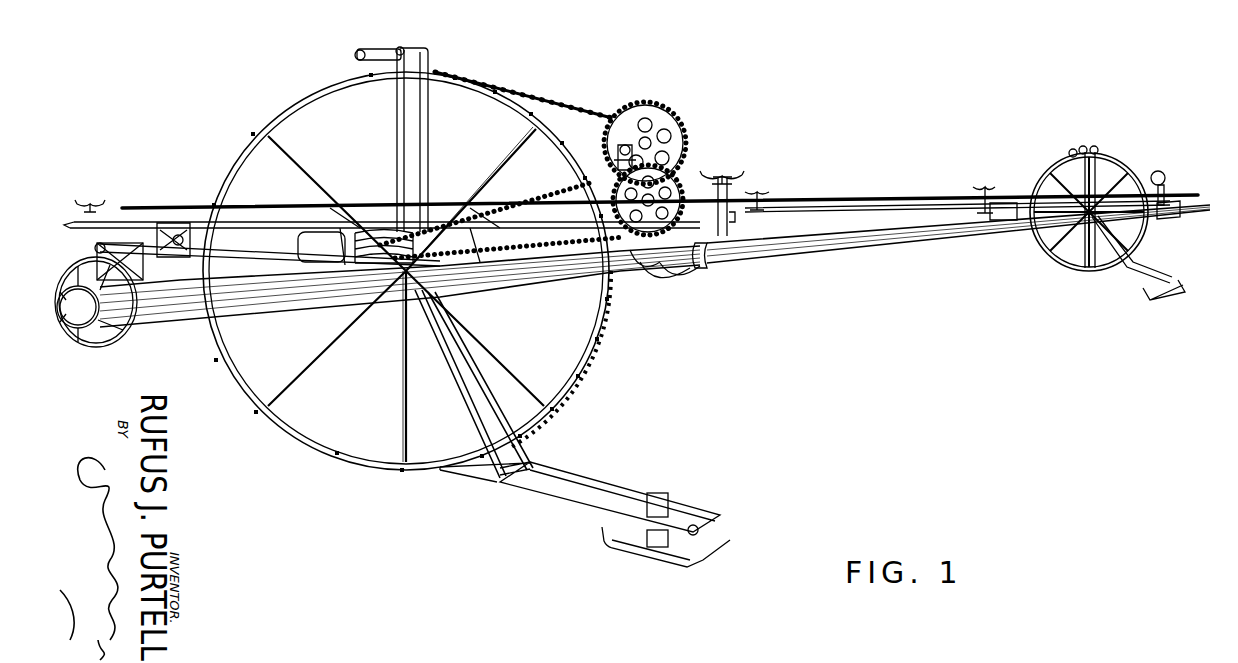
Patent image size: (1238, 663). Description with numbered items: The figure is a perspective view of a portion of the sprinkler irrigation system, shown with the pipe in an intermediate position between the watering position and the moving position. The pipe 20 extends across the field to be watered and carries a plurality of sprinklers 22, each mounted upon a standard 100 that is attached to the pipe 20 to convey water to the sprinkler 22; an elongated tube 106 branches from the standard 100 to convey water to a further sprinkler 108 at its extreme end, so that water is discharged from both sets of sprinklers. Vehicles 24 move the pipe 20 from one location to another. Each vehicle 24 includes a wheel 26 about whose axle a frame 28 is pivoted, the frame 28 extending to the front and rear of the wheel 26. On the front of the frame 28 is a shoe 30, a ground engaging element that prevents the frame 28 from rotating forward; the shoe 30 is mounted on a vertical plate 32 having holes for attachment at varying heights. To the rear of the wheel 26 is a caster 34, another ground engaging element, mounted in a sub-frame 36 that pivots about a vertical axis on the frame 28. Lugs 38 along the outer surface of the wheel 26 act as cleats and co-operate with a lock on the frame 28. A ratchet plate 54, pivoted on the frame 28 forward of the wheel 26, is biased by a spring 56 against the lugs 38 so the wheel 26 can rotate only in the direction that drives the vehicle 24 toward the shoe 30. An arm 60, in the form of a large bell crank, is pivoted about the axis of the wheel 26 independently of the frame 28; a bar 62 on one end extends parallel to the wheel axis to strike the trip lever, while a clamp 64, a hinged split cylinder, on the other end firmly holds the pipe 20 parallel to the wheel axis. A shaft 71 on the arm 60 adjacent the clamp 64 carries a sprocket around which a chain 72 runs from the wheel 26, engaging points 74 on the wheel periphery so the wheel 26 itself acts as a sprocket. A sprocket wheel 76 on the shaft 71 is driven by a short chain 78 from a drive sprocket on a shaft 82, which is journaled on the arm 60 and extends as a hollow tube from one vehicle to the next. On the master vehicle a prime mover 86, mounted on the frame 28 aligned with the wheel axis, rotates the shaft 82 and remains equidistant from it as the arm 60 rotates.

The pipe 20 is at (838, 244).
The sprinklers 22 is at (735, 176).
The vehicles 24 is at (228, 103).
The wheel 26 is at (318, 85).
The frame 28 is at (540, 442).
The shoe 30 is at (680, 558).
The vertical plate 32 is at (660, 500).
The caster 34 is at (128, 330).
The sub-frame 36 is at (100, 278).
The lugs 38 is at (336, 82).
The ratchet plate 54 is at (466, 476).
The spring 56 is at (525, 478).
The arm 60 is at (428, 97).
The bar 62 is at (368, 47).
The clamp 64 is at (686, 268).
The shaft 71 is at (650, 135).
The chain 72 is at (530, 104).
The points 74 is at (556, 130).
The sprocket wheel 76 is at (620, 115).
The short chain 78 is at (675, 178).
The shaft 82 is at (899, 196).
The prime mover 86 is at (300, 243).
The standard 100 is at (730, 212).
The elongated tube 106 is at (110, 222).
The sprinkler 108 is at (90, 204).